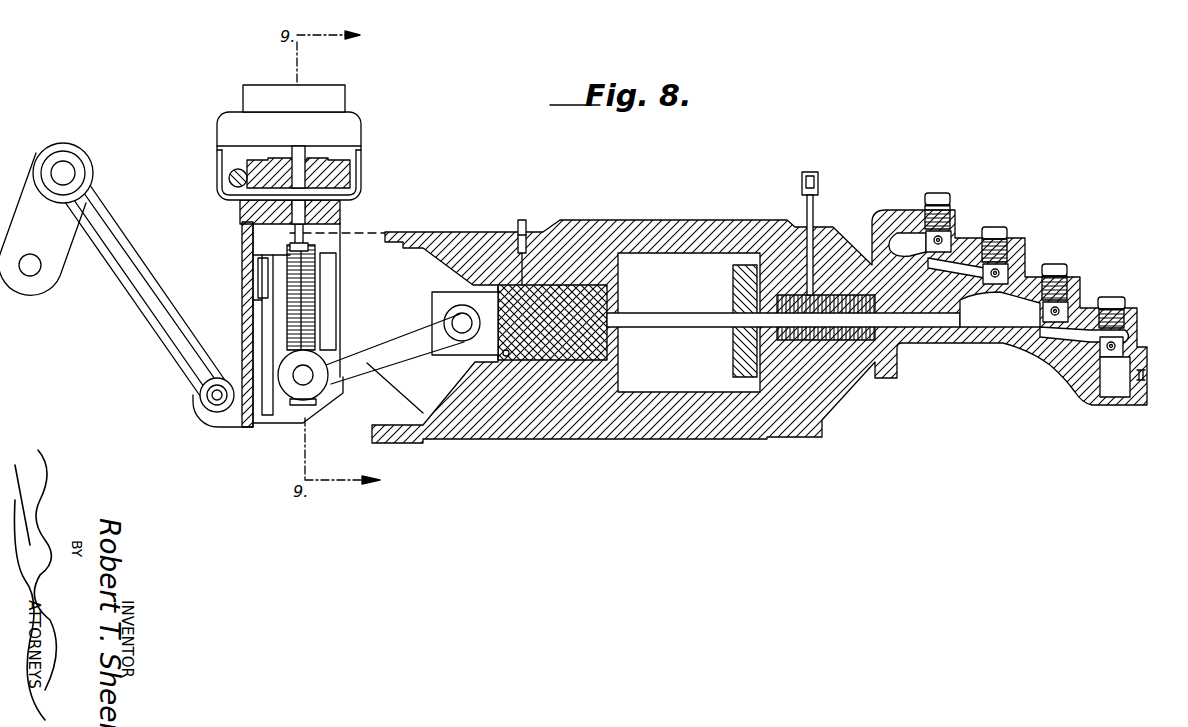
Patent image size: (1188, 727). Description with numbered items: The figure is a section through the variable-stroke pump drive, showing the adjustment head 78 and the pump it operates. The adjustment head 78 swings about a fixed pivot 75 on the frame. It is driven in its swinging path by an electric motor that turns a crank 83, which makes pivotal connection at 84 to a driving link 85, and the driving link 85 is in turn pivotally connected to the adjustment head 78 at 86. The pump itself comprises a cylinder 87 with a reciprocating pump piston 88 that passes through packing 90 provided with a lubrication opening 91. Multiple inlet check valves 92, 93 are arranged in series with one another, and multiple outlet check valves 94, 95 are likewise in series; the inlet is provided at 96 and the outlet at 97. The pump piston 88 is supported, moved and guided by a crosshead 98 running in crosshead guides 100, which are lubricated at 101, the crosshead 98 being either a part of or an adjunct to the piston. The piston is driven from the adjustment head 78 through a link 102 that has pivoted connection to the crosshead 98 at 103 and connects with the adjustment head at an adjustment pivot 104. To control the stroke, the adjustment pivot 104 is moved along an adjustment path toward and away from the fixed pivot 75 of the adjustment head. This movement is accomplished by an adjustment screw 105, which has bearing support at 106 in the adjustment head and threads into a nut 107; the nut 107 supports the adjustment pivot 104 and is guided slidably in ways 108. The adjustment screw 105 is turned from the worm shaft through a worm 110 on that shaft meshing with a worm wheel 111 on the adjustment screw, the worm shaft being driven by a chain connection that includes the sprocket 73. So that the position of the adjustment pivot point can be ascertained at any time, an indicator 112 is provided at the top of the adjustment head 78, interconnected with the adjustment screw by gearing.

The sprocket 73 is at (230, 193).
The fixed pivot 75 is at (292, 250).
The adjustment head 78 is at (243, 299).
The crank 83 is at (33, 188).
The pivotal connection 84 is at (66, 168).
The driving link 85 is at (125, 250).
The pivotal connection 86 is at (208, 395).
The cylinder 87 is at (1000, 323).
The pump piston 88 is at (921, 317).
The packing 90 is at (832, 348).
The lubrication opening 91 is at (804, 210).
The inlet check valve 92 is at (1088, 346).
The inlet check valve 93 is at (1072, 303).
The outlet check valve 94 is at (1020, 255).
The outlet check valve 95 is at (956, 232).
The inlet 96 is at (1124, 387).
The outlet 97 is at (910, 237).
The crosshead 98 is at (593, 362).
The crosshead guides 100 is at (511, 364).
The lubrication point 101 is at (525, 220).
The link 102 is at (392, 337).
The pivoted connection 103 is at (456, 337).
The adjustment pivot 104 is at (310, 376).
The adjustment screw 105 is at (301, 302).
The bearing support 106 is at (332, 204).
The nut 107 is at (267, 402).
The ways 108 is at (260, 272).
The worm 110 is at (224, 172).
The worm wheel 111 is at (350, 176).
The indicator 112 is at (336, 98).